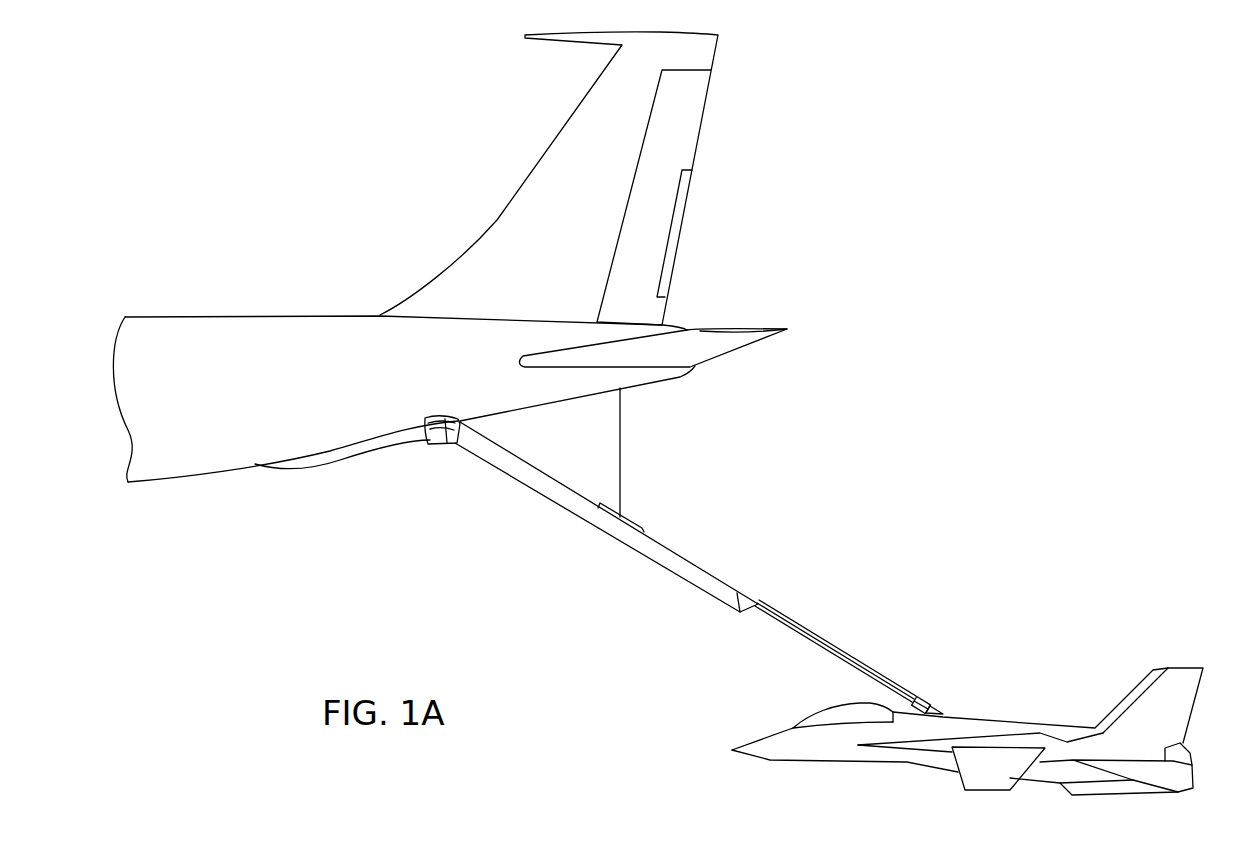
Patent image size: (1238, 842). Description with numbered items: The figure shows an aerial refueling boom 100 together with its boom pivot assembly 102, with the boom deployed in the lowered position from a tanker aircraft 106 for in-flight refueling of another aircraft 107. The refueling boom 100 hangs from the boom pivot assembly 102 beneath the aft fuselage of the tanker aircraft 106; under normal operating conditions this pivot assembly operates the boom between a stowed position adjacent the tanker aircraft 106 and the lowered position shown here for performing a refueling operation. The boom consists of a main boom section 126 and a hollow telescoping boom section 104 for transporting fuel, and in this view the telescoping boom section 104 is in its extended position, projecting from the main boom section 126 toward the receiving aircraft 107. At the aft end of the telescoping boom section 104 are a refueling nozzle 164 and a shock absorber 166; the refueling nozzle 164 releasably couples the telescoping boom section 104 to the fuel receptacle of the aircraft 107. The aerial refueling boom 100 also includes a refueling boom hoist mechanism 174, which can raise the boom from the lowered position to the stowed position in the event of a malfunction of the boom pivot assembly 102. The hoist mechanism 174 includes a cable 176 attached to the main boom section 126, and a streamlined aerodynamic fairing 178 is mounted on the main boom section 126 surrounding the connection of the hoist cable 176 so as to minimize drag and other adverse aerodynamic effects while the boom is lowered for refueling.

The aerial refueling boom 100 is at (706, 551).
The boom pivot assembly 102 is at (440, 453).
The telescoping boom section 104 is at (875, 657).
The tanker aircraft 106 is at (166, 316).
The aircraft 107 is at (732, 750).
The main boom section 126 is at (606, 517).
The refueling nozzle 164 is at (943, 713).
The shock absorber 166 is at (925, 700).
The refueling boom hoist mechanism 174 is at (628, 433).
The cable 176 is at (622, 467).
The streamlined aerodynamic fairing 178 is at (633, 525).